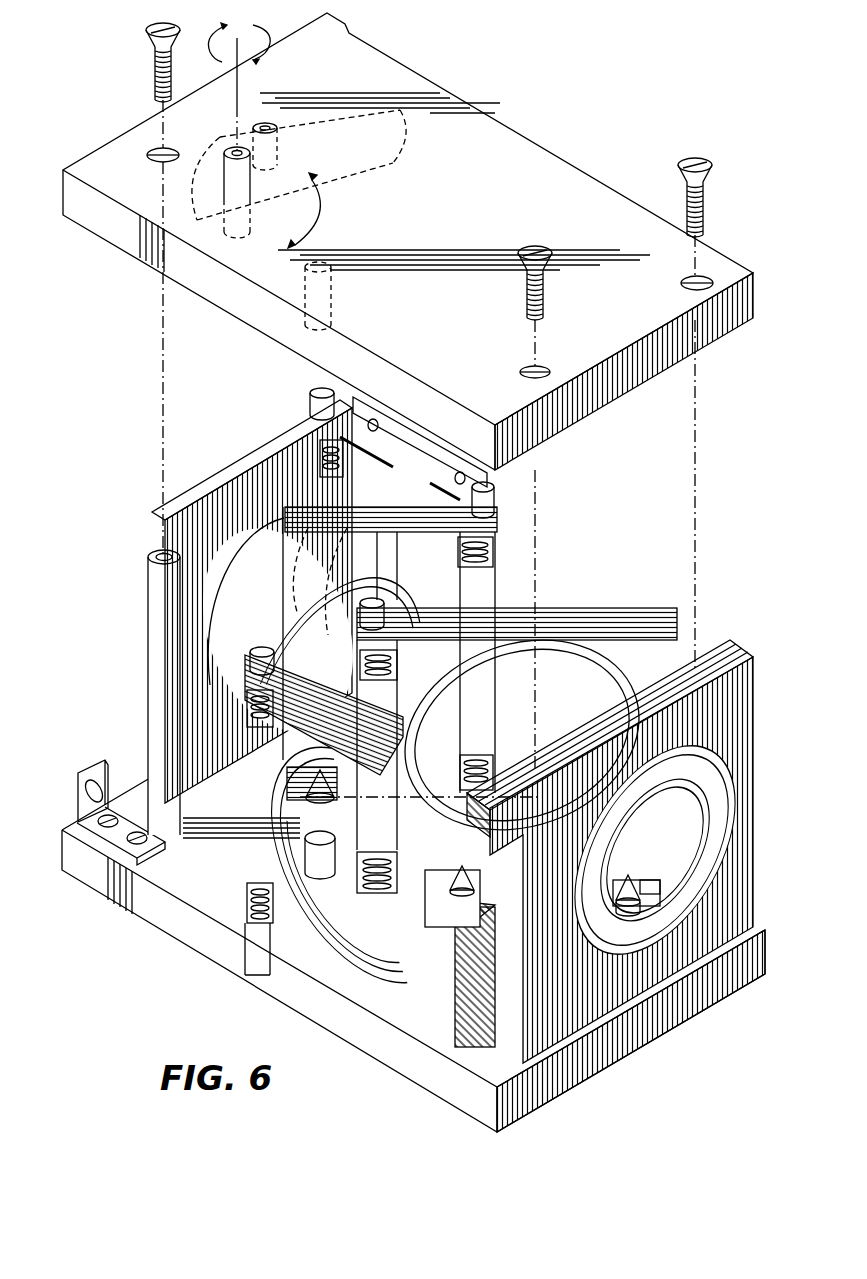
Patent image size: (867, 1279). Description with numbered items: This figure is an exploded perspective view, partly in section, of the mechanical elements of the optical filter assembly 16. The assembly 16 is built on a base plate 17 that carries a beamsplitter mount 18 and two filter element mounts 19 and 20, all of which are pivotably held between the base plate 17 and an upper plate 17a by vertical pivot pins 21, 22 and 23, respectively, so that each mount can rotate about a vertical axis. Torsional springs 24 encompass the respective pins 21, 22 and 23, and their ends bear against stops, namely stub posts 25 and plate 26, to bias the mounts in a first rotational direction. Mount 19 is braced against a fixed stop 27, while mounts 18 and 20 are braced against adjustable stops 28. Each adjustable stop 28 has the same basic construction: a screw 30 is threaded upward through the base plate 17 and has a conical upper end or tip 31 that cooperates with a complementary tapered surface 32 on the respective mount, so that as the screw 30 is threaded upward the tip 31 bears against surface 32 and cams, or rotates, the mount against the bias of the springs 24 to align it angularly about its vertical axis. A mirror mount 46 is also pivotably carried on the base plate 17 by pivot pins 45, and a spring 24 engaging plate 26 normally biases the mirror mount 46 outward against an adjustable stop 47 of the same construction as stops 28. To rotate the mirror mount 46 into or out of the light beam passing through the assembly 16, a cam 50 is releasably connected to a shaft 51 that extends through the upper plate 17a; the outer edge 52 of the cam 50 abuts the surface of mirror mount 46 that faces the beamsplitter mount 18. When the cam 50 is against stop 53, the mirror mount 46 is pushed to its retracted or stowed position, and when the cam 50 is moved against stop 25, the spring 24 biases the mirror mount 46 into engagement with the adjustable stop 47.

The optical filter assembly 16 is at (705, 1020).
The base plate 17 is at (445, 1085).
The upper plate 17a is at (545, 172).
The beamsplitter mount 18 is at (597, 617).
The filter element mount 19 is at (230, 880).
The filter element mount 20 is at (212, 478).
The vertical pivot pin 21 is at (387, 595).
The vertical pivot pin 22 is at (257, 640).
The vertical pivot pin 23 is at (310, 400).
The torsional spring 24 is at (320, 467).
The stub post 25 is at (265, 300).
The plate 26 is at (490, 477).
The stop 27 is at (445, 1037).
The adjustable stop 28 is at (625, 935).
The screw 30 is at (640, 923).
The conical upper end 31 is at (640, 875).
The tapered surface 32 is at (646, 880).
The pivot pin 45 is at (493, 515).
The mirror mount 46 is at (302, 535).
The adjustable stop 47 is at (293, 790).
The cam 50 is at (320, 125).
The shaft 51 is at (215, 183).
The outer edge 52 is at (402, 97).
The stop 53 is at (222, 137).